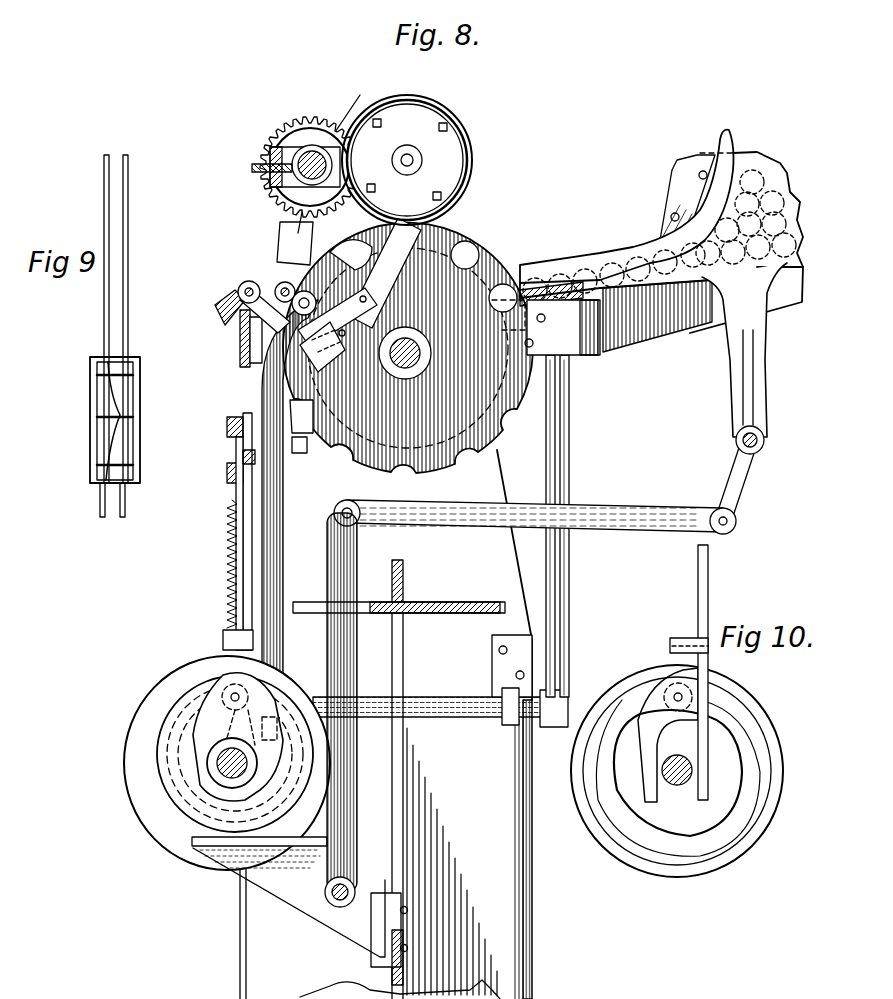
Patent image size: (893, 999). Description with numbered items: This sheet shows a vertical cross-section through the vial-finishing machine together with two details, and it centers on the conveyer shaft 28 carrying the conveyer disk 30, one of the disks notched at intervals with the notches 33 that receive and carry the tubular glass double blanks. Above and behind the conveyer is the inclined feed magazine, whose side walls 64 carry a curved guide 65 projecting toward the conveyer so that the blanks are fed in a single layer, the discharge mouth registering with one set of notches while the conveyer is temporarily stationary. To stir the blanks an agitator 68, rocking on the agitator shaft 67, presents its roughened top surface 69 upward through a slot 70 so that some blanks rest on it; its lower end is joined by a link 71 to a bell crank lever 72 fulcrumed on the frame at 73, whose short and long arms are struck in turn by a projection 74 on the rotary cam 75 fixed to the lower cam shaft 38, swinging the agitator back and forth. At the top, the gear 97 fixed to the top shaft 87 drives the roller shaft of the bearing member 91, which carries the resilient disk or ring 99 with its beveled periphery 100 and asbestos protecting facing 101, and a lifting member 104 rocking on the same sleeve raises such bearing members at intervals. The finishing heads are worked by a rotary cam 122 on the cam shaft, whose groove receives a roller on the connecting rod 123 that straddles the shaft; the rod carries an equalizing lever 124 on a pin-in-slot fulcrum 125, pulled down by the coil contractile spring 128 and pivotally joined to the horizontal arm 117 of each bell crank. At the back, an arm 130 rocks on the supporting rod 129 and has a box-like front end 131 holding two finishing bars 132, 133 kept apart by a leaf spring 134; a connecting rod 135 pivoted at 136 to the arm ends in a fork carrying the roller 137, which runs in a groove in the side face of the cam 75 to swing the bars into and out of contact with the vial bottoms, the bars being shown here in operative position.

In FIG. 8, the conveyer shaft 28 is at (418, 360).
In FIG. 8, the conveyer disk 30 is at (480, 268).
In FIG. 8, the notches 33 is at (452, 247).
In FIG. 8, the lower cam shaft 38 is at (226, 773).
In FIG. 10, the lower cam shaft 38 is at (677, 786).
In FIG. 8, the side walls 64 is at (762, 152).
In FIG. 8, the curved guide 65 is at (585, 258).
In FIG. 8, the agitator shaft 67 is at (760, 440).
In FIG. 8, the agitator 68 is at (744, 350).
In FIG. 8, the roughened top surface 69 is at (748, 362).
In FIG. 8, the slot 70 is at (676, 346).
In FIG. 8, the link 71 is at (745, 480).
In FIG. 8, the bell crank lever 72 is at (646, 508).
In FIG. 8, the fulcrum 73 is at (336, 906).
In FIG. 8, the projection 74 is at (270, 871).
In FIG. 8, the rotary cam 75 is at (190, 820).
In FIG. 8, the top shaft 87 is at (357, 104).
In FIG. 8, the bearing member 91 is at (352, 202).
In FIG. 8, the gear 97 is at (300, 118).
In FIG. 8, the resilient disk or ring 99 is at (458, 142).
In FIG. 8, the beveled periphery 100 is at (470, 167).
In FIG. 8, the asbestos protecting facing 101 is at (453, 178).
In FIG. 8, the lifting member 104 is at (252, 168).
In FIG. 8, the horizontal arm 117 is at (228, 425).
In FIG. 10, the rotary cam 122 is at (770, 686).
In FIG. 8, the connecting rod 123 is at (243, 541).
In FIG. 10, the connecting rod 123 is at (708, 577).
In FIG. 8, the equalizing lever 124 is at (243, 453).
In FIG. 8, the fulcrum 125 is at (247, 412).
In FIG. 8, the coil contractile spring 128 is at (231, 592).
In FIG. 8, the supporting rod 129 is at (244, 285).
In FIG. 8, the arm 130 is at (280, 288).
In FIG. 8, the front end 131 is at (352, 323).
In FIG. 9, the front end 131 is at (138, 398).
In FIG. 8, the finishing bar 132 is at (385, 277).
In FIG. 9, the finishing bar 132 is at (104, 316).
In FIG. 9, the finishing bar 133 is at (128, 316).
In FIG. 9, the leaf spring 134 is at (118, 398).
In FIG. 8, the connecting rod 135 is at (283, 508).
In FIG. 8, the pivot 136 is at (240, 322).
In FIG. 8, the roller 137 is at (205, 695).